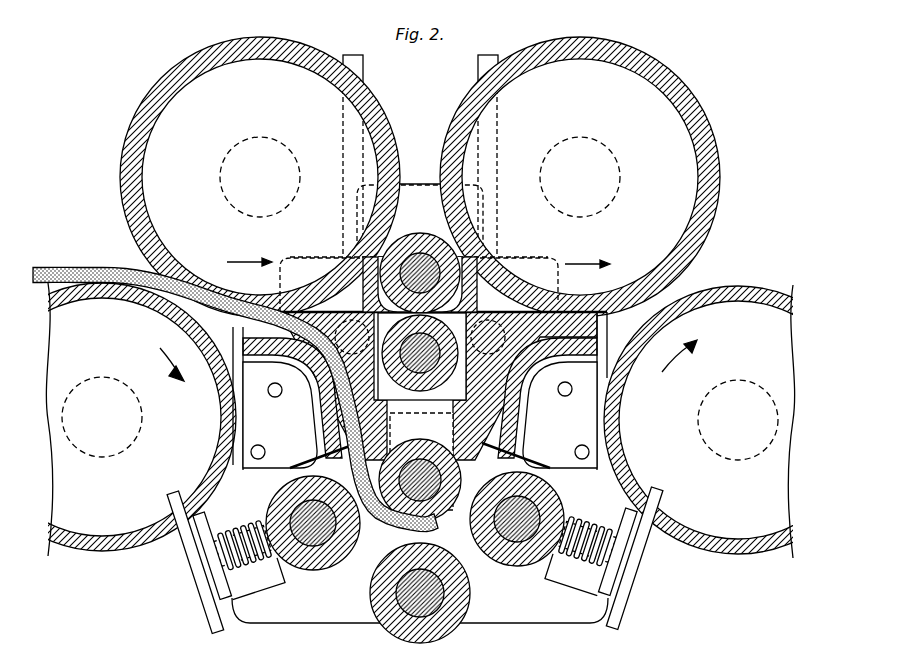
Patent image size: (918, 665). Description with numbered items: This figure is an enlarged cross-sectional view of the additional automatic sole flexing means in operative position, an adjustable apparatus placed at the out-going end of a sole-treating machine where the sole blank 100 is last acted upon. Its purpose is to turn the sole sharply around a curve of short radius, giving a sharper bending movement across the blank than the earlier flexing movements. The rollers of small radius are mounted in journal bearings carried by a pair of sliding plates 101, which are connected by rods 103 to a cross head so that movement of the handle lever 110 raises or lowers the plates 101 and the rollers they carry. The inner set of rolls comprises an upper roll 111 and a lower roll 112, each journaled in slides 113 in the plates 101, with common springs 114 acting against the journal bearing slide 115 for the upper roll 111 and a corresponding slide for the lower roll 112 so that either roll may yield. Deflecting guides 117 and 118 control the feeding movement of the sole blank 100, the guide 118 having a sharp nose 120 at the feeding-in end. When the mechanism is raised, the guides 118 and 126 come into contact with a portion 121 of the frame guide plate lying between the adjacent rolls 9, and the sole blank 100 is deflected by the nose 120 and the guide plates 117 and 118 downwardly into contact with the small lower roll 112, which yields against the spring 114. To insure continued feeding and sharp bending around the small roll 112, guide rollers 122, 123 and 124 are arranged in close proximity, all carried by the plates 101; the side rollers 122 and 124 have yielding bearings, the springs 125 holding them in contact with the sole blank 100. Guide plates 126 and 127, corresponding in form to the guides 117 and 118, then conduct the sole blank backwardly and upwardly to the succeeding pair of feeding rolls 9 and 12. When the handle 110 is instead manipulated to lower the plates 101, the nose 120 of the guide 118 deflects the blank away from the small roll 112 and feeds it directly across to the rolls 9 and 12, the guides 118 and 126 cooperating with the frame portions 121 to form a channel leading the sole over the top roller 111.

The feeding rolls 9 is at (150, 106).
The feeding and flexing rolls 12 is at (92, 553).
The sole blank 100 is at (88, 274).
The sliding plates 101 is at (420, 190).
The rods 103 is at (478, 70).
The handle lever 110 is at (453, 418).
The upper roll 111 is at (443, 385).
The lower roll 112 is at (392, 530).
The slides 113 is at (453, 398).
The springs 114 is at (598, 418).
The journal bearing slide 115 is at (500, 302).
The deflecting guide 117 is at (318, 364).
The deflecting guide 118 is at (322, 394).
The sharp nose 120 is at (303, 312).
The portion of guide plate 121 is at (322, 290).
The guide roller 122 is at (316, 572).
The guide roller 123 is at (468, 618).
The guide roller 124 is at (424, 454).
The springs 125 is at (228, 562).
The guide plate 126 is at (420, 240).
The guide plate 127 is at (562, 340).